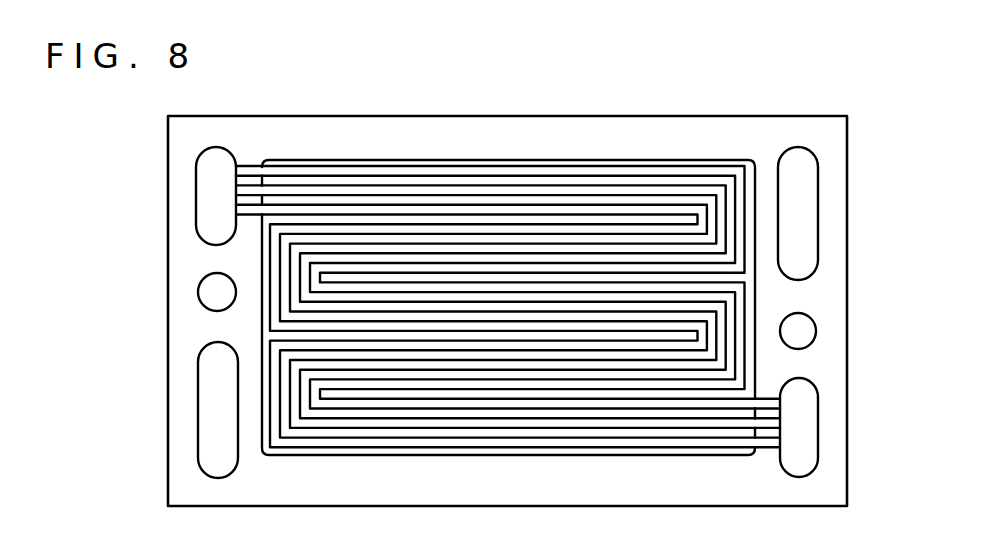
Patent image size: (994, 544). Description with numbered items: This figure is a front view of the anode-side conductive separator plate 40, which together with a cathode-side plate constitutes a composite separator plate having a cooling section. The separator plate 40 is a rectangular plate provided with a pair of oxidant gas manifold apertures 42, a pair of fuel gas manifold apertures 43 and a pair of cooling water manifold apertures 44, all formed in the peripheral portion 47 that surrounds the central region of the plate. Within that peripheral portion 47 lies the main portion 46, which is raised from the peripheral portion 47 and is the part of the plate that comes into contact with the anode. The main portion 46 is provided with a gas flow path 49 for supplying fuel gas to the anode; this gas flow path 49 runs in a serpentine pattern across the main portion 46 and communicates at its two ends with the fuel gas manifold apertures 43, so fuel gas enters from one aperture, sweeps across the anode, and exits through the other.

The anode-side conductive separator plate 40 is at (502, 111).
The oxidant gas manifold apertures 42 is at (805, 207).
The fuel gas manifold apertures 43 is at (220, 188).
The cooling water manifold apertures 44 is at (218, 294).
The main portion 46 is at (621, 163).
The peripheral portion 47 is at (723, 138).
The gas flow path 49 is at (384, 173).